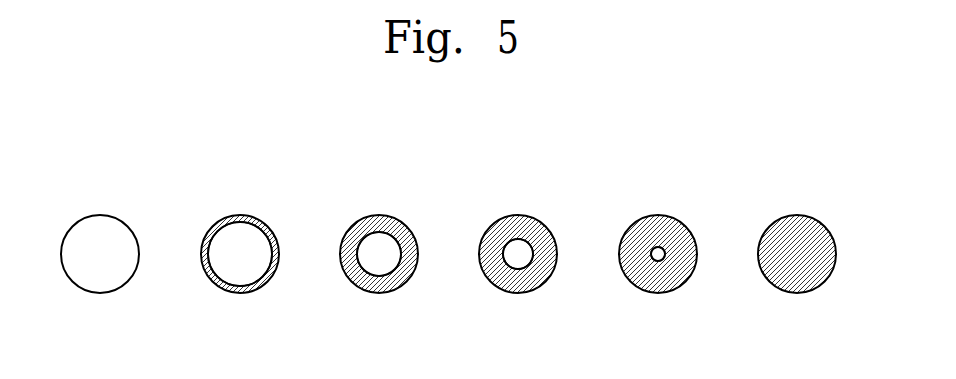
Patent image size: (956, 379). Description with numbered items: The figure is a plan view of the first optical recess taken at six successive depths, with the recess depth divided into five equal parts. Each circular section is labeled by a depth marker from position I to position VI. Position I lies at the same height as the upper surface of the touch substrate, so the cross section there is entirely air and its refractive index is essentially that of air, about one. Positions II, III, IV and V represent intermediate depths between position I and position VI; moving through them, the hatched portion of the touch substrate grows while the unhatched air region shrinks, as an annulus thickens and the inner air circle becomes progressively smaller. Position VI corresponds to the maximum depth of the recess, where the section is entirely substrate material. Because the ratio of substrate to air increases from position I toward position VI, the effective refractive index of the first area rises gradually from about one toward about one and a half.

The position I is at (100, 247).
The position II is at (242, 247).
The position III is at (381, 247).
The position IV is at (520, 247).
The position V is at (659, 247).
The position VI is at (800, 247).